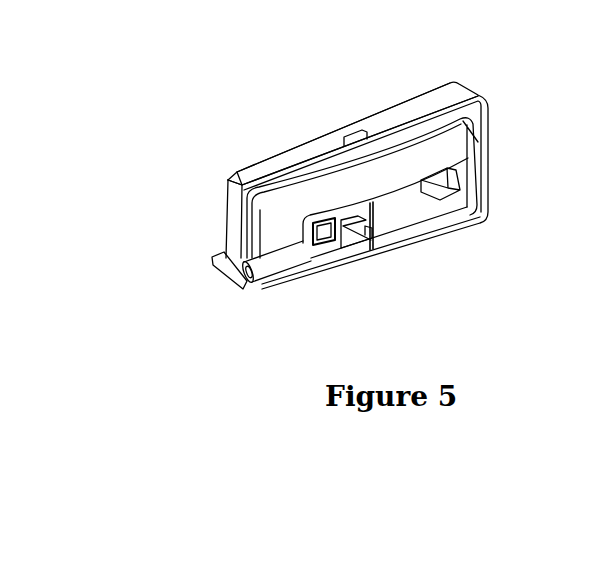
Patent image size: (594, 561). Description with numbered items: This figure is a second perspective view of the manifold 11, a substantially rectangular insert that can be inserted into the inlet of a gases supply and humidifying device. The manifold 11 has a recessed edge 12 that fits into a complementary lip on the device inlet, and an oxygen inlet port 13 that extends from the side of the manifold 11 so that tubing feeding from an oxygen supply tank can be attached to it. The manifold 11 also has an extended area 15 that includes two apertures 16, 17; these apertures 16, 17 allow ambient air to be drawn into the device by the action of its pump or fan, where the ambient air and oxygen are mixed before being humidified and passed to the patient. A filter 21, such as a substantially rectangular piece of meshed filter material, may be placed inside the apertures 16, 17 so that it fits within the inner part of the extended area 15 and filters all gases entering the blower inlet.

The manifold 11 is at (498, 72).
The recessed edge 12 is at (310, 155).
The oxygen inlet port 13 is at (240, 285).
The extended area 15 is at (407, 222).
The aperture 16 is at (338, 250).
The aperture 17 is at (447, 195).
The filter 21 is at (310, 242).